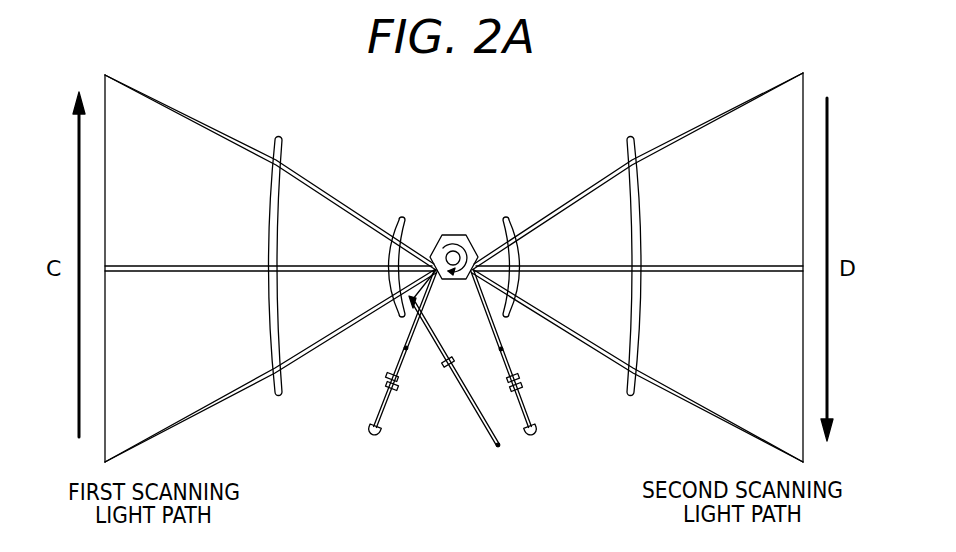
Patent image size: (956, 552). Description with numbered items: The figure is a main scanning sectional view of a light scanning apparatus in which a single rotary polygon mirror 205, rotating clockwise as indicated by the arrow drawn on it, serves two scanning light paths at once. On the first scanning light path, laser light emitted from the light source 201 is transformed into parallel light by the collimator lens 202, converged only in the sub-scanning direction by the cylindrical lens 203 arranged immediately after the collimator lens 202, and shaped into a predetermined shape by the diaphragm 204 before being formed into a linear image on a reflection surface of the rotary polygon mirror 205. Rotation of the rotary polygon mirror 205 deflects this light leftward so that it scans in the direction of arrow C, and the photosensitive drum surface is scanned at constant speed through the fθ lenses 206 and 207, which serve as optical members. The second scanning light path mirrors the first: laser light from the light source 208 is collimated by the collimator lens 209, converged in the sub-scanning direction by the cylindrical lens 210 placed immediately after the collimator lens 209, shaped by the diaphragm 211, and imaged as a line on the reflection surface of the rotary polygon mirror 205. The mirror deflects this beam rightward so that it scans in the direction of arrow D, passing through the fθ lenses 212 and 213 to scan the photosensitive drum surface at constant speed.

The light source 201 is at (374, 430).
The collimator lens 202 is at (392, 394).
The cylindrical lens 203 is at (387, 380).
The diaphragm 204 is at (410, 349).
The rotary polygon mirror 205 is at (454, 235).
The fθ lens 206 is at (402, 217).
The fθ lens 207 is at (278, 135).
The light source 208 is at (532, 432).
The collimator lens 209 is at (522, 388).
The cylindrical lens 210 is at (520, 378).
The diaphragm 211 is at (508, 348).
The fθ lens 212 is at (506, 217).
The fθ lens 213 is at (630, 135).